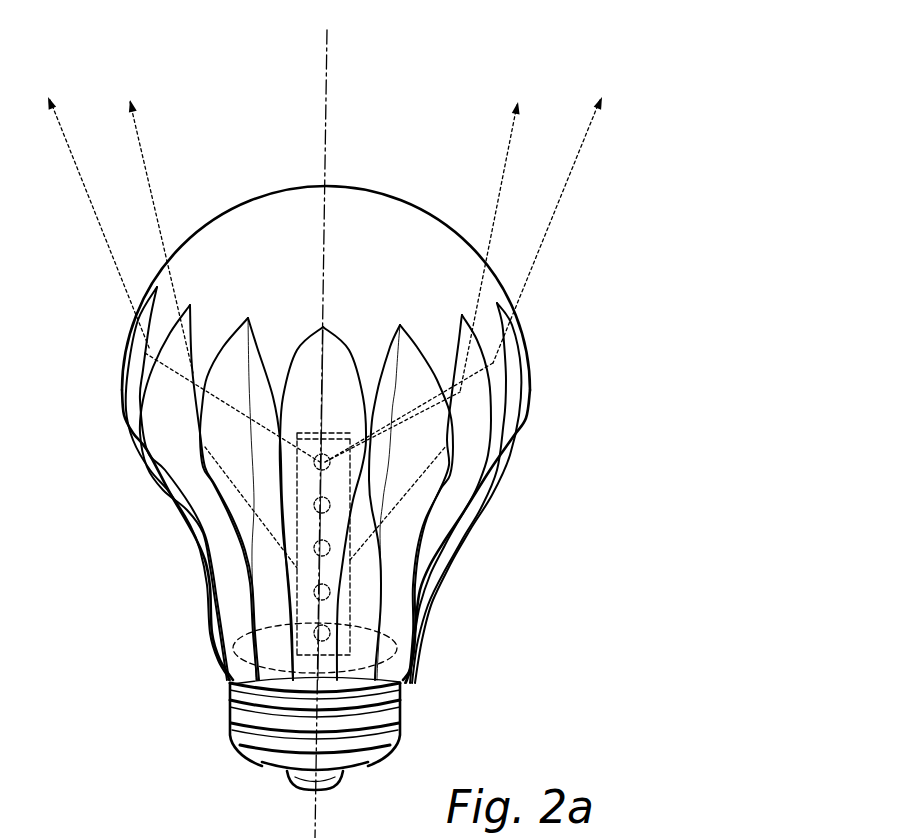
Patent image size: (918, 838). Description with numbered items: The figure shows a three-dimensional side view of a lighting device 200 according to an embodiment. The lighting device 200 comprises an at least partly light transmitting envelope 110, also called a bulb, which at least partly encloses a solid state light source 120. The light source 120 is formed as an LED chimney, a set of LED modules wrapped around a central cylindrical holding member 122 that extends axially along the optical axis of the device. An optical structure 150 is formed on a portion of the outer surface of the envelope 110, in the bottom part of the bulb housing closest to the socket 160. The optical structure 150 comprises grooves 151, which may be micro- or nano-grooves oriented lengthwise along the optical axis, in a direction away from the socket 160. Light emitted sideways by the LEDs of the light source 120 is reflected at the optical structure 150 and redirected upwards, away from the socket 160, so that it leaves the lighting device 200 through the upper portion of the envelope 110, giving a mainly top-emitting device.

The envelope 110 is at (268, 218).
The solid state light source 120 is at (325, 468).
The cylindrical holding member 122 is at (293, 523).
The optical structure 150 is at (137, 487).
The grooves 151 is at (482, 447).
The socket 160 is at (383, 727).
The lighting device 200 is at (427, 92).